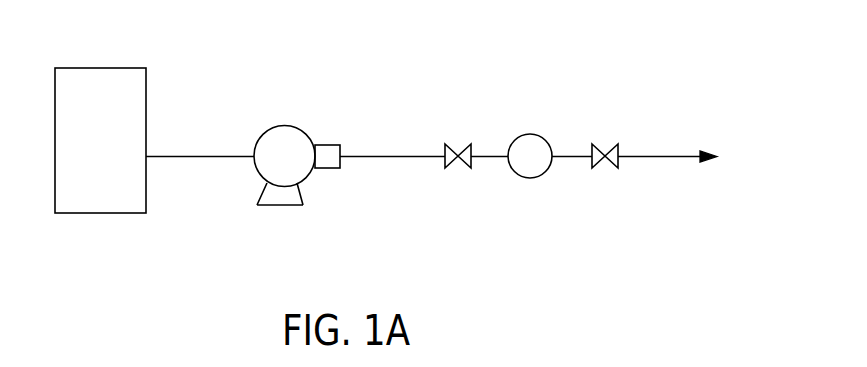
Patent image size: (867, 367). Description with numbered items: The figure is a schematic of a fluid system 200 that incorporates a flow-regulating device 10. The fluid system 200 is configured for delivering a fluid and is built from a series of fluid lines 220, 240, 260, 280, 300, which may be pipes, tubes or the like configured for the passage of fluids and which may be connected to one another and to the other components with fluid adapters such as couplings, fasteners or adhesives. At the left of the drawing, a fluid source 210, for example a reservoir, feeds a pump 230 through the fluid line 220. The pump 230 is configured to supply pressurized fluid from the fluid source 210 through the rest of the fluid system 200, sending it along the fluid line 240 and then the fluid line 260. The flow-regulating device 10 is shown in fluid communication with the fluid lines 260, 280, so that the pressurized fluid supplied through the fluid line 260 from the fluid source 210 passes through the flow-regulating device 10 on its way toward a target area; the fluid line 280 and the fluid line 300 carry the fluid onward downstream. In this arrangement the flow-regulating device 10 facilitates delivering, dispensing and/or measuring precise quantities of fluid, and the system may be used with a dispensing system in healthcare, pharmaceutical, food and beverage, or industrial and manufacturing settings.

The flow-regulating device 10 is at (530, 145).
The fluid system 200 is at (657, 91).
The fluid source 210 is at (112, 214).
The fluid line 220 is at (213, 158).
The pump 230 is at (288, 207).
The fluid line 240 is at (393, 158).
The fluid line 260 is at (485, 158).
The fluid line 280 is at (573, 159).
The fluid line 300 is at (645, 159).